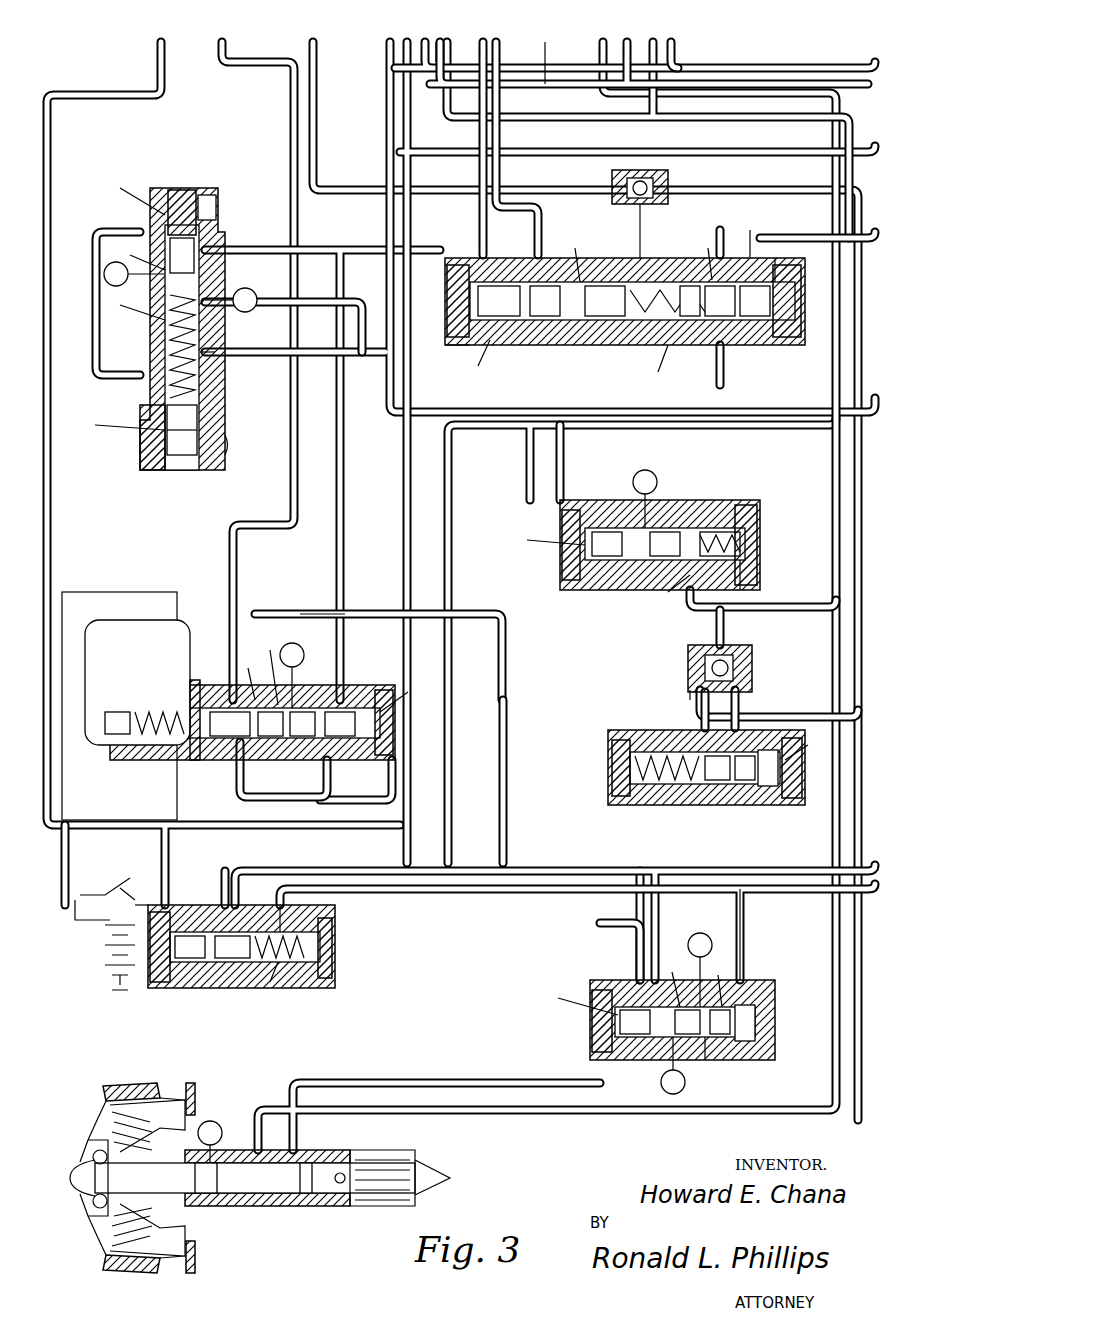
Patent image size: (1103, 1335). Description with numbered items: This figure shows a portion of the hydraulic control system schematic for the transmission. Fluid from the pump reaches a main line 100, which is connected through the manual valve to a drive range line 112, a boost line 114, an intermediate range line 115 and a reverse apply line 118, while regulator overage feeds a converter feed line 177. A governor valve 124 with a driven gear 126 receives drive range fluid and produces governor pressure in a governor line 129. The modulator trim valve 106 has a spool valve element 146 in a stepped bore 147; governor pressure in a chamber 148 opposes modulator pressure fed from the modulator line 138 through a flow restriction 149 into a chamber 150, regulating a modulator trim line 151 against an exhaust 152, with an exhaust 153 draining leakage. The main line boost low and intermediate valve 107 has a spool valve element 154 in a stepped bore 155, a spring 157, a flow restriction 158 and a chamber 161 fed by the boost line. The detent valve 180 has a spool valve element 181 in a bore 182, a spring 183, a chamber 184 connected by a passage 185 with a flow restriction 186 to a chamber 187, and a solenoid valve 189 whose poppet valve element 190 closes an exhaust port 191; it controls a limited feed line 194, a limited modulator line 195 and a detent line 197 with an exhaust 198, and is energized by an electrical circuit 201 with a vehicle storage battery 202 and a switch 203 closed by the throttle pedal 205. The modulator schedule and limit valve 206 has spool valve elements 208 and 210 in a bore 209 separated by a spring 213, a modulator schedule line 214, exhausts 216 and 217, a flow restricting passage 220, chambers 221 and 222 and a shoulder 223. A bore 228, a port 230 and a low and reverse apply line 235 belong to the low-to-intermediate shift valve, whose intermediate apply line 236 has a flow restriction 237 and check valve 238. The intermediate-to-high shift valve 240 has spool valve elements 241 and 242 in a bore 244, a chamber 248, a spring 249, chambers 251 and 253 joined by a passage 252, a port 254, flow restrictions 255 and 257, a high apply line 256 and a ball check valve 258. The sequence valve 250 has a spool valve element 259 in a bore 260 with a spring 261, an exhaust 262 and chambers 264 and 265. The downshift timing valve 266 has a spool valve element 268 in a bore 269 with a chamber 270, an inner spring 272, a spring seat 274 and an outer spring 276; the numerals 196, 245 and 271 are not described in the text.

The main line 100 is at (231, 52).
The modulator trim valve 106 is at (770, 1052).
The main line boost low and intermediate valve 107 is at (340, 978).
The drive range line 112 is at (412, 138).
The boost line 114 is at (163, 62).
The intermediate range line 115 is at (316, 70).
The reverse apply line 118 is at (320, 84).
The governor valve 124 is at (355, 1150).
The driven gear 126 is at (420, 1155).
The governor line 129 is at (605, 52).
The modulator line 138 is at (320, 798).
The spool valve element 146 is at (640, 1045).
The stepped bore 147 is at (705, 1065).
The chamber 148 is at (595, 1018).
The flow restriction 149 is at (760, 955).
The chamber 150 is at (768, 1024).
The modulator trim line 151 is at (315, 872).
The exhaust 152 is at (668, 1092).
The exhaust 153 is at (742, 980).
The spool valve element 154 is at (215, 962).
The stepped bore 155 is at (283, 905).
The spring 157 is at (318, 945).
The flow restriction 158 is at (225, 880).
The chamber 161 is at (160, 958).
The converter feed line 177 is at (318, 50).
The detent valve 180 is at (388, 690).
The spool valve element 181 is at (340, 685).
The bore 182 is at (352, 700).
The spring 183 is at (208, 700).
The chamber 184 is at (380, 718).
The passage 185 is at (290, 745).
The flow restriction 186 is at (342, 745).
The chamber 187 is at (222, 748).
The solenoid valve 189 is at (180, 612).
The poppet valve element 190 is at (142, 748).
The exhaust port 191 is at (175, 748).
The limited feed line 194 is at (320, 612).
The limited modulator line 195 is at (275, 248).
The passage 196 is at (497, 58).
The detent line 197 is at (510, 62).
The exhaust 198 is at (318, 618).
The electrical circuit 201 is at (72, 912).
The vehicle storage battery 202 is at (105, 950).
The switch 203 is at (90, 880).
The accelerator or throttle pedal 205 is at (218, 878).
The modulator schedule and limit valve 206 is at (225, 183).
The spool valve element 208 is at (140, 412).
The bore 209 is at (222, 455).
The spool valve element 210 is at (215, 250).
The spring 213 is at (150, 350).
The modulator schedule line 214 is at (92, 290).
The exhaust 216 is at (110, 262).
The exhaust 217 is at (272, 305).
The flow restricting passage 220 is at (180, 190).
The chamber 221 is at (205, 195).
The chamber 222 is at (150, 440).
The shoulder 223 is at (215, 352).
The bore 228 is at (440, 56).
The port 230 is at (548, 64).
The low and reverse apply line 235 is at (695, 58).
The intermediate apply line 236 is at (690, 600).
The flow restriction 237 is at (752, 685).
The check valve 238 is at (752, 664).
The 2-3 shift valve 240 is at (605, 280).
The spool valve element 241 is at (545, 340).
The spool valve element 242 is at (745, 345).
The bore 244 is at (602, 340).
The port 245 is at (450, 345).
The chamber 248 is at (452, 295).
The spring 249 is at (643, 340).
The 1-2-3 sequence valve 250 is at (735, 496).
The chamber 251 is at (785, 258).
The passage 252 is at (714, 340).
The chamber 253 is at (692, 345).
The port 254 is at (505, 340).
The flow restriction 255 is at (755, 225).
The high apply line 256 is at (433, 66).
The flow restriction 257 is at (770, 345).
The ball check valve 258 is at (662, 188).
The spool valve element 259 is at (705, 520).
The bore 260 is at (752, 558).
The spring 261 is at (752, 535).
The exhaust 262 is at (660, 480).
The chamber 264 is at (560, 520).
The chamber 265 is at (750, 578).
The 3-2 downshift timing valve 266 is at (615, 735).
The spool valve element 268 is at (770, 790).
The bore 269 is at (745, 800).
The chamber 270 is at (790, 782).
The valve plug 271 is at (758, 740).
The inner spring 272 is at (630, 775).
The spring seat 274 is at (700, 728).
The outer spring 276 is at (612, 760).